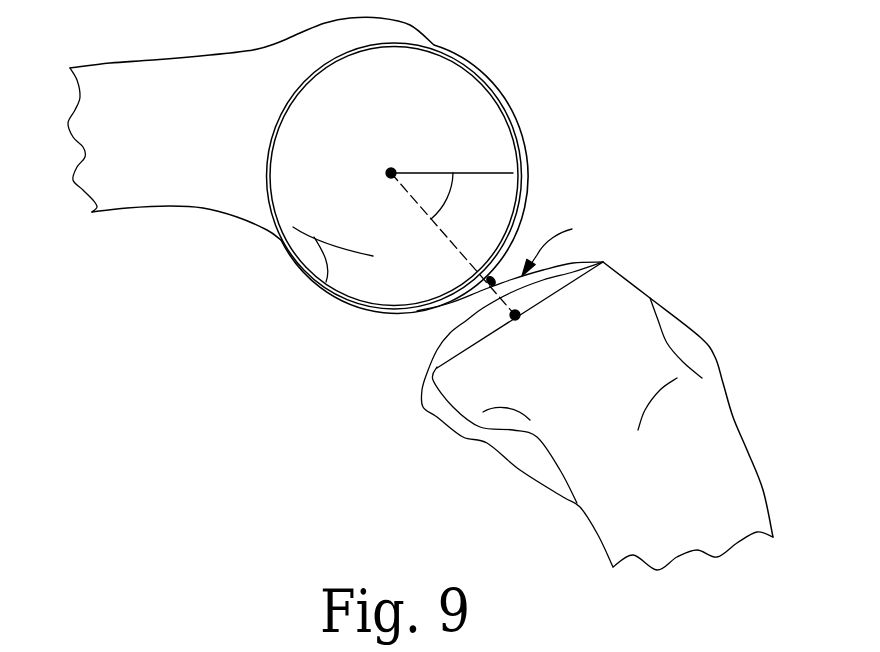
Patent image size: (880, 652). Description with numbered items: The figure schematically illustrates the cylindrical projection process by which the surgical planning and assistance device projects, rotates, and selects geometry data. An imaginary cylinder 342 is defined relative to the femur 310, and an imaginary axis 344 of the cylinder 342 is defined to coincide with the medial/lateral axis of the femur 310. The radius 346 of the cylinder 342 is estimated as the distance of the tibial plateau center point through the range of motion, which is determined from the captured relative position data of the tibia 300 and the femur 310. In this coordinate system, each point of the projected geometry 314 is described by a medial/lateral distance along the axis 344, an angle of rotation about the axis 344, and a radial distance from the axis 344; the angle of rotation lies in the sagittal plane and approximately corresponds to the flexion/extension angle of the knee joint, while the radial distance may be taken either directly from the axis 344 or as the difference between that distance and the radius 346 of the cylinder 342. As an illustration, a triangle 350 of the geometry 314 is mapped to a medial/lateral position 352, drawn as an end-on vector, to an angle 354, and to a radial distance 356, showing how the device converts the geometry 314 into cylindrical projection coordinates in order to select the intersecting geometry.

The tibia 300 is at (586, 416).
The femur 310 is at (150, 76).
The geometry 314 is at (567, 242).
The imaginary cylinder 342 is at (470, 68).
The imaginary axis 344 is at (388, 168).
The radius 346 is at (481, 173).
The triangle 350 is at (517, 317).
The medial/lateral position 352 is at (517, 322).
The angle 354 is at (447, 201).
The radial distance 356 is at (467, 320).